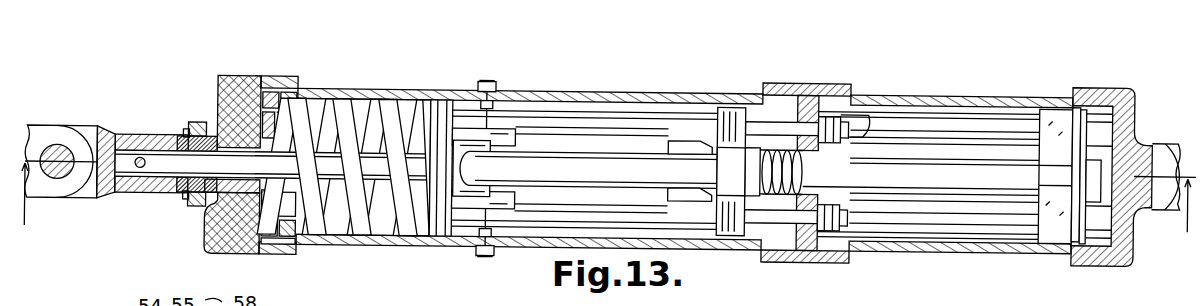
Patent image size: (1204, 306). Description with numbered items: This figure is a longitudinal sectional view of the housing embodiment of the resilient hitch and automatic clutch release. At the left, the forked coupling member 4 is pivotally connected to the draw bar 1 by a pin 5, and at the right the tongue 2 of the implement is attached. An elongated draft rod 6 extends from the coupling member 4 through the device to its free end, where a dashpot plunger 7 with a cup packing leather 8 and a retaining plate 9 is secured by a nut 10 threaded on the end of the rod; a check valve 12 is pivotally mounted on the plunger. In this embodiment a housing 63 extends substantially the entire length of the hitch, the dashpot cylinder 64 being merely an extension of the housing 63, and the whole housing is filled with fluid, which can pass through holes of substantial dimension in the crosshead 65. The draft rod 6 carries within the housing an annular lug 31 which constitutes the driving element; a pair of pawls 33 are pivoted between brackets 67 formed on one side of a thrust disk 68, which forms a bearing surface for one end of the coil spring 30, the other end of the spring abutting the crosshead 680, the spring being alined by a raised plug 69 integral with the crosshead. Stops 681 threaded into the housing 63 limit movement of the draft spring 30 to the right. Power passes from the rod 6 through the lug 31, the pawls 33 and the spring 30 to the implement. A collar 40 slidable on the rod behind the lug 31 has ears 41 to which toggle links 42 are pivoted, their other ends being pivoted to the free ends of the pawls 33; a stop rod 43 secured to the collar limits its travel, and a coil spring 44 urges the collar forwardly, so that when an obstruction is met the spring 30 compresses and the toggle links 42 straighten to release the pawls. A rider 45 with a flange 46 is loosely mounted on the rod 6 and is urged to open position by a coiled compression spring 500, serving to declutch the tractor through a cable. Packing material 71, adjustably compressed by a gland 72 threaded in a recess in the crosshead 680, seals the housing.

The draw bar 1 is at (38, 133).
The tongue 2 is at (1172, 146).
The forked coupling member 4 is at (90, 133).
The pin 5 is at (60, 152).
The draft rod 6 is at (156, 164).
The dashpot plunger 7 is at (1056, 104).
The cup packing leather 8 is at (1066, 114).
The retaining plate 9 is at (1092, 160).
The nut 10 is at (1130, 140).
The check valve 12 is at (605, 209).
The spring 30 is at (343, 104).
The ring or annular lug 31 is at (685, 143).
The pawls 33 is at (594, 173).
The collar 40 is at (734, 145).
The ears 41 is at (748, 146).
The toggle links 42 is at (798, 118).
The stop rod 43 is at (800, 114).
The coil spring 44 is at (752, 171).
The rider 45 is at (180, 197).
The flange 46 is at (197, 211).
The housing 63 is at (414, 103).
The dashpot cylinder 64 is at (933, 98).
The crosshead 65 is at (847, 134).
The brackets 67 is at (498, 136).
The thrust disk 68 is at (452, 100).
The raised plug 69 is at (258, 102).
The packing material 71 is at (218, 140).
The gland 72 is at (245, 147).
The coiled compression spring 500 is at (183, 140).
The crosshead 680 is at (293, 257).
The stops 681 is at (492, 84).